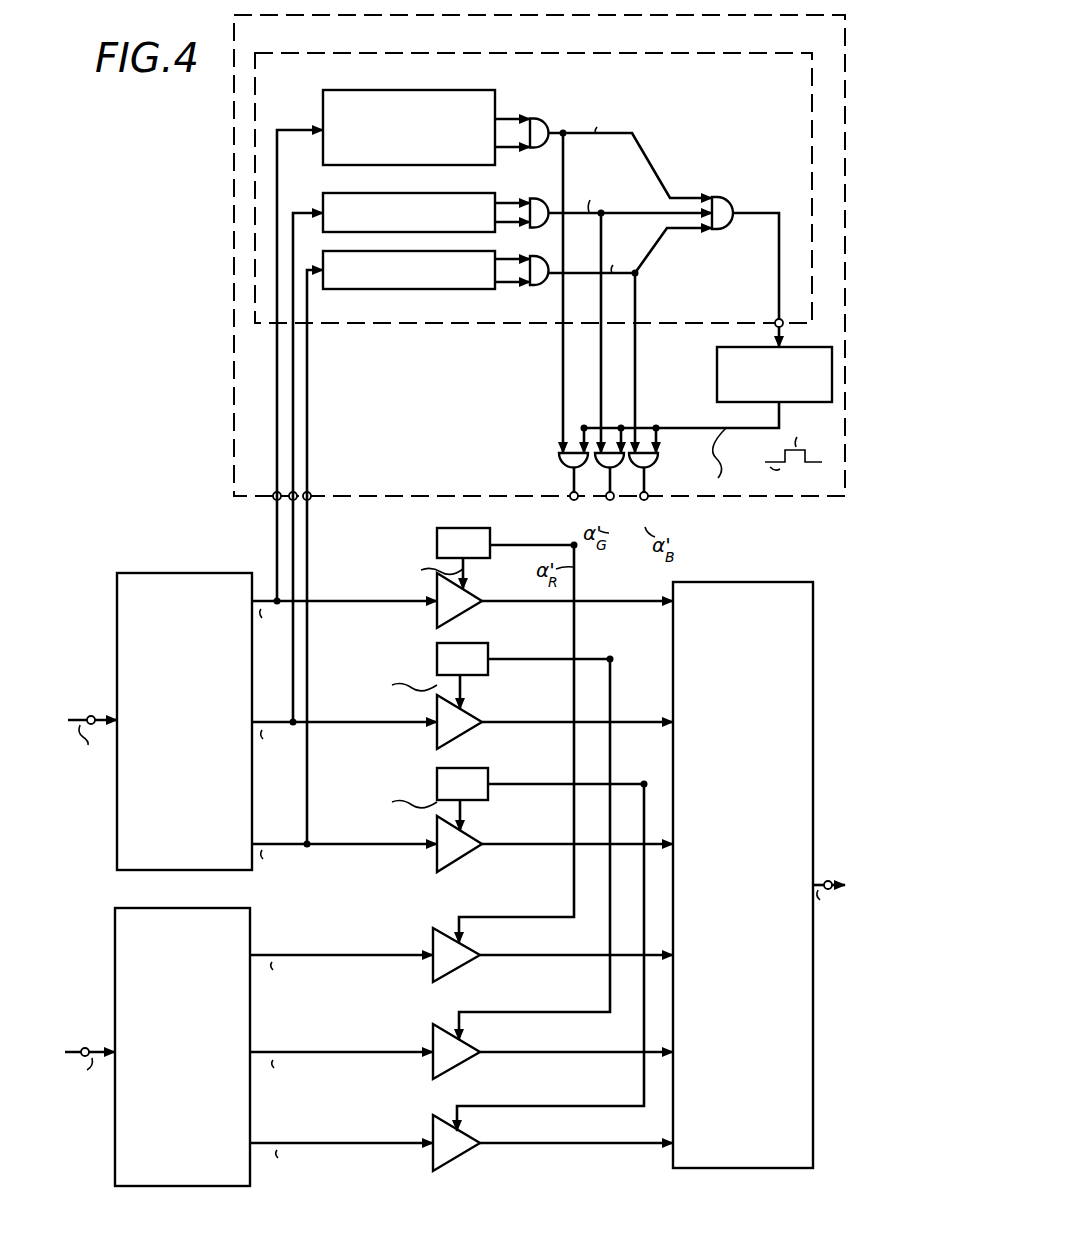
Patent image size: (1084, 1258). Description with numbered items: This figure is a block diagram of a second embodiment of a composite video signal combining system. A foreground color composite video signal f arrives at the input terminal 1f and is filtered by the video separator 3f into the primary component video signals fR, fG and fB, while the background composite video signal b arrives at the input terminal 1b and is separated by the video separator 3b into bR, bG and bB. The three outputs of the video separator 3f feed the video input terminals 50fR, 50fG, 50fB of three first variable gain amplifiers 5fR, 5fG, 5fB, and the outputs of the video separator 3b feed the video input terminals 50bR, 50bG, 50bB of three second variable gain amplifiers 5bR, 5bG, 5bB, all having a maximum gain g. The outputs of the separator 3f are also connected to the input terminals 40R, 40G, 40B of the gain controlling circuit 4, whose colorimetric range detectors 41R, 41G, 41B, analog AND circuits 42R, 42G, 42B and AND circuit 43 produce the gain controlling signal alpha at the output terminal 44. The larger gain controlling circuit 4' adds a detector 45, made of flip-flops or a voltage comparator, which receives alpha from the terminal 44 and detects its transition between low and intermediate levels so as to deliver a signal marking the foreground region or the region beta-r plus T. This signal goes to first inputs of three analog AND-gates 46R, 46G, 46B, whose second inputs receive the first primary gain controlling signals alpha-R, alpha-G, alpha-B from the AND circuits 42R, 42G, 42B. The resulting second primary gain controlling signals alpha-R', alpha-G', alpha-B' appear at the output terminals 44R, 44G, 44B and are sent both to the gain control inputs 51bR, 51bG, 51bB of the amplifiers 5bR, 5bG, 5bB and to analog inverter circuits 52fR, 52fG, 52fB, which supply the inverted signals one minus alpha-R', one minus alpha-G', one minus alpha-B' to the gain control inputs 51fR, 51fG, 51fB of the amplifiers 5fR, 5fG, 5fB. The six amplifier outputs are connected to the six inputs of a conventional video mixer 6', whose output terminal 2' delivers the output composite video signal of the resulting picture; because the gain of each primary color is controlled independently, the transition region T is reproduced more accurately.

The gain controlling circuit 4' is at (520, 255).
The gain controlling circuit 4 is at (509, 188).
The colorimetric range detector 41R is at (402, 90).
The colorimetric range detector 41G is at (331, 196).
The colorimetric range detector 41B is at (416, 289).
The analog AND circuit 42R is at (543, 115).
The analog AND circuit 42G is at (542, 198).
The analog AND circuit 42B is at (540, 256).
The AND circuit 43 is at (723, 196).
The output terminal 44 is at (776, 322).
The detector 45 is at (717, 354).
The analog AND-gate 46R is at (561, 463).
The analog AND-gate 46G is at (611, 435).
The analog AND-gate 46B is at (659, 459).
The output terminal 44R is at (570, 501).
The output terminal 44G is at (605, 496).
The output terminal 44B is at (648, 500).
The input terminal 40R is at (272, 499).
The input terminal 40G is at (297, 490).
The input terminal 40B is at (309, 499).
The video separator 3f is at (185, 573).
The video separator 3b is at (177, 911).
The input terminal 1f is at (91, 715).
The input terminal 1b is at (87, 1048).
The video input terminal 50fR is at (428, 597).
The video input terminal 50fG is at (434, 718).
The video input terminal 50fB is at (434, 842).
The video input terminal 50bR is at (428, 950).
The video input terminal 50bG is at (430, 1048).
The video input terminal 50bB is at (430, 1140).
The gain control input 51fR is at (467, 588).
The gain control input 51fG is at (469, 706).
The gain control input 51fB is at (469, 828).
The gain control input 51bR is at (466, 946).
The gain control input 51bG is at (460, 1042).
The gain control input 51bB is at (460, 1134).
The analog inverter circuit 52fR is at (462, 529).
The analog inverter circuit 52fG is at (438, 674).
The analog inverter circuit 52fB is at (438, 769).
The first variable gain amplifier 5fR is at (465, 610).
The first variable gain amplifier 5fG is at (466, 732).
The first variable gain amplifier 5fB is at (464, 860).
The second variable gain amplifier 5bR is at (465, 976).
The second variable gain amplifier 5bG is at (457, 1074).
The second variable gain amplifier 5bB is at (451, 1164).
The video mixer 6' is at (743, 858).
The output terminal 2' is at (829, 884).